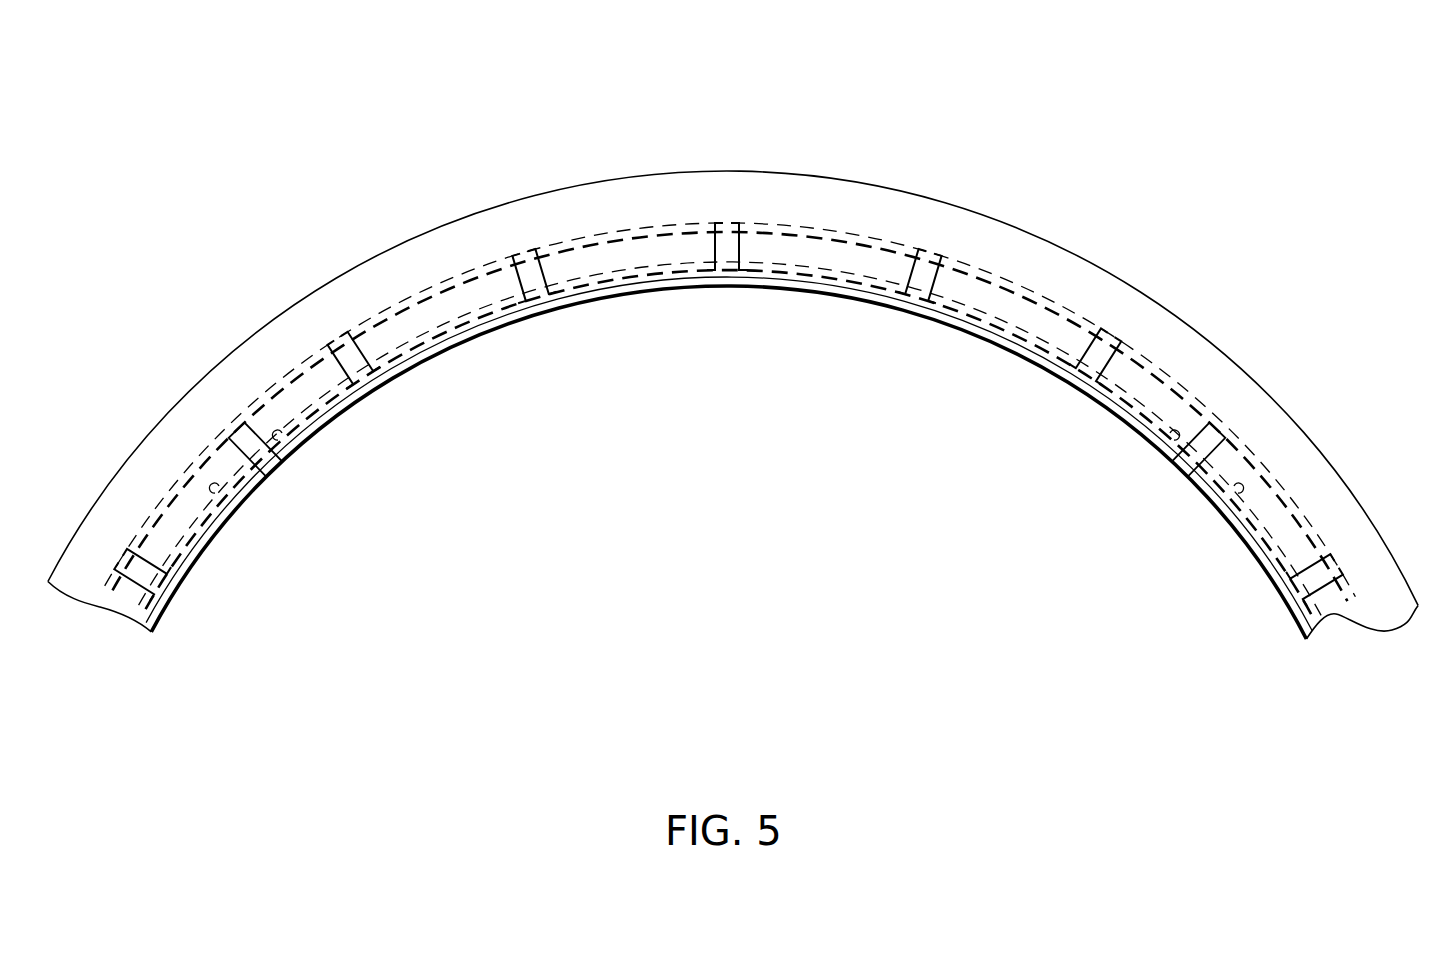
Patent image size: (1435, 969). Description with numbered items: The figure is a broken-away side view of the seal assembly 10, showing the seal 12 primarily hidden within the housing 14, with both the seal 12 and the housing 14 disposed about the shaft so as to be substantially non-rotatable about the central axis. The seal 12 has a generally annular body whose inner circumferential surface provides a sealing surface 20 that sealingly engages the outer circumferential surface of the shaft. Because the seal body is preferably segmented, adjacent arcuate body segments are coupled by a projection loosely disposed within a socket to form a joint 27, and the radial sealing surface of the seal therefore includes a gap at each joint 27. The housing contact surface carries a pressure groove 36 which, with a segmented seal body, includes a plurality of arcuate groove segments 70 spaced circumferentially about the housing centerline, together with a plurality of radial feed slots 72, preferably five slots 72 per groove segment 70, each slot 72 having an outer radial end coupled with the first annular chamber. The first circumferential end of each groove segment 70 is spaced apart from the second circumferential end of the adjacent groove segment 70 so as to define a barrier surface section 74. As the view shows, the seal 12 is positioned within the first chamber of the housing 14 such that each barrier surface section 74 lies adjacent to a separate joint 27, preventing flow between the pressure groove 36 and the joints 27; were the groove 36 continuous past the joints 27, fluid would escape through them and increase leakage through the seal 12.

The seal assembly 10 is at (775, 125).
The housing 14 is at (462, 219).
The seal 12 is at (571, 305).
The arcuate groove segment 70 is at (673, 279).
The pressure groove 36 is at (830, 290).
The inner circumferential sealing surface 20 is at (446, 351).
The radial feed slot 72 is at (338, 328).
The joint 27 is at (268, 476).
The barrier surface section 74 is at (262, 513).